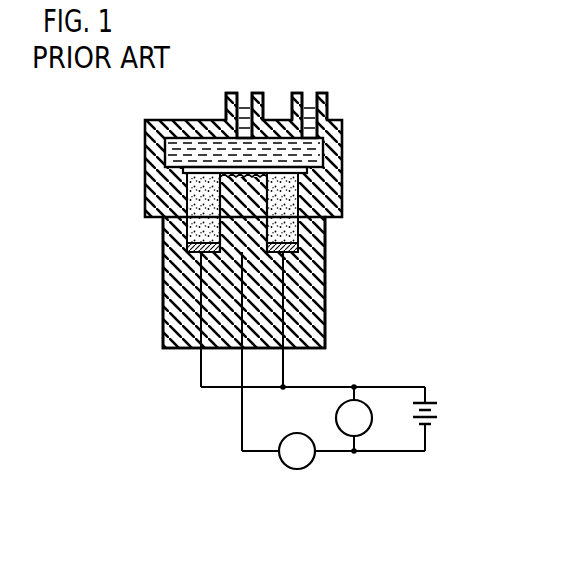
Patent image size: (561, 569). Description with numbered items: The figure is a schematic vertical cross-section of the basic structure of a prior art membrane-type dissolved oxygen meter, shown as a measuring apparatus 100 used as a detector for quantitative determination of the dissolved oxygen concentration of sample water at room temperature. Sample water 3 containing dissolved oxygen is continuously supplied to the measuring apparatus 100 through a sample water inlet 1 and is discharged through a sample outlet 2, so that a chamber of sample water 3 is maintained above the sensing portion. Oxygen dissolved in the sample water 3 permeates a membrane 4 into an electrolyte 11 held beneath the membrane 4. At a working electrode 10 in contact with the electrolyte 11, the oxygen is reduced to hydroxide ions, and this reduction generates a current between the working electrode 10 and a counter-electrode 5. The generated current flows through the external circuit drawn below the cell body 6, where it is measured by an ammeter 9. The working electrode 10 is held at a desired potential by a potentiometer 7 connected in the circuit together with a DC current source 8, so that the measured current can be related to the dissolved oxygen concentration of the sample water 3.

The measuring apparatus 100 is at (131, 178).
The sample water inlet 1 is at (243, 100).
The sample outlet 2 is at (308, 99).
The sample water 3 is at (323, 152).
The membrane 4 is at (305, 173).
The counter-electrode 5 is at (300, 247).
The body 6 is at (310, 300).
The potentiometer 7 is at (364, 405).
The DC current source 8 is at (437, 408).
The ammeter 9 is at (297, 470).
The working electrode 10 is at (172, 259).
The electrolyte 11 is at (178, 239).